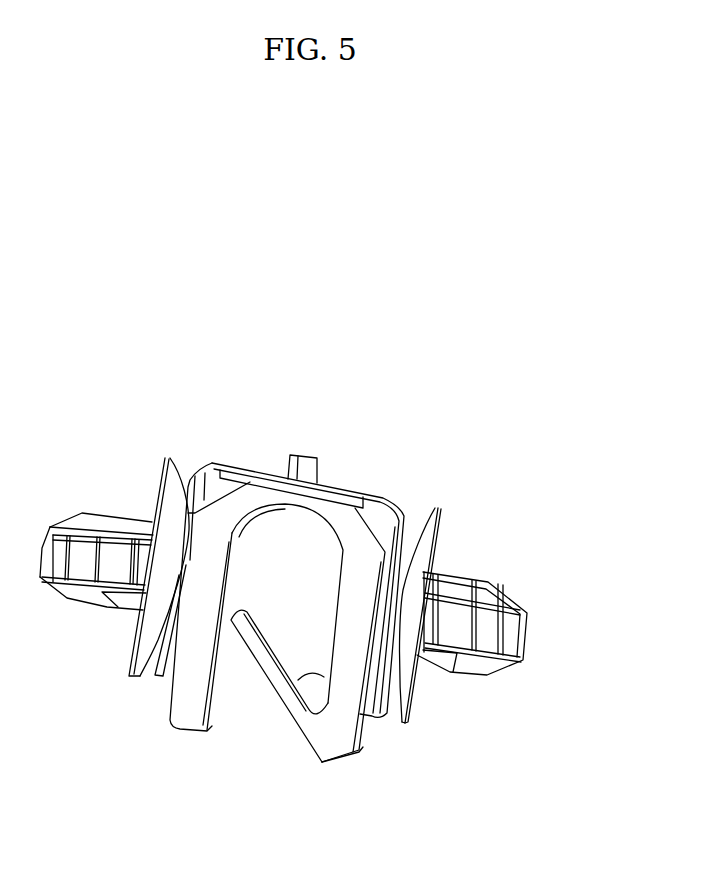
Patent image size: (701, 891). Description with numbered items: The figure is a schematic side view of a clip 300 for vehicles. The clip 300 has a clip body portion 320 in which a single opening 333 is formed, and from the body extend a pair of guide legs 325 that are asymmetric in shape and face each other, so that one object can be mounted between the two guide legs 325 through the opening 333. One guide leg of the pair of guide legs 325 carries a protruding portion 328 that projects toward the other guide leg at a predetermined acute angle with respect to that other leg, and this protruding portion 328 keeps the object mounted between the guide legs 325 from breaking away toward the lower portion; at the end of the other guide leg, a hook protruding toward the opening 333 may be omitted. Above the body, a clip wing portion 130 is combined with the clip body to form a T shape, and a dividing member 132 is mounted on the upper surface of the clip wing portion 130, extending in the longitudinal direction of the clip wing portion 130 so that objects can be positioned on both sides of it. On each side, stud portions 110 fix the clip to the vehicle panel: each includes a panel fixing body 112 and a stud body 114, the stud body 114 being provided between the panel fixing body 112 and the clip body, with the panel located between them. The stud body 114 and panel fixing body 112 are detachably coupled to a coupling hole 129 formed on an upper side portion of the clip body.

The clip 300 is at (285, 262).
The clip body portion 320 is at (367, 556).
The opening 333 is at (340, 578).
The protruding portion 328 is at (250, 645).
The guide legs 325 is at (341, 733).
The clip wing portion 130 is at (248, 484).
The dividing member 132 is at (290, 450).
The stud portions 110 is at (321, 630).
The panel fixing body 112 is at (512, 633).
The coupling hole 129 is at (170, 620).
The stud body 114 is at (400, 680).